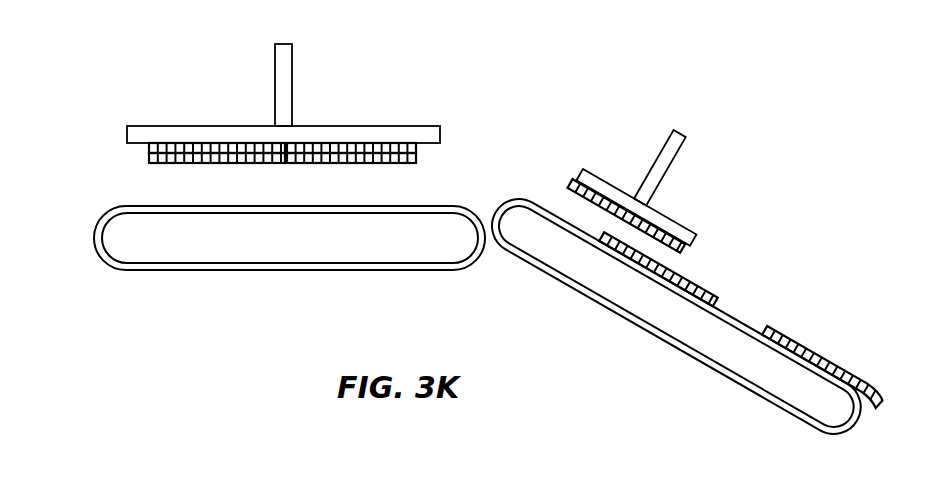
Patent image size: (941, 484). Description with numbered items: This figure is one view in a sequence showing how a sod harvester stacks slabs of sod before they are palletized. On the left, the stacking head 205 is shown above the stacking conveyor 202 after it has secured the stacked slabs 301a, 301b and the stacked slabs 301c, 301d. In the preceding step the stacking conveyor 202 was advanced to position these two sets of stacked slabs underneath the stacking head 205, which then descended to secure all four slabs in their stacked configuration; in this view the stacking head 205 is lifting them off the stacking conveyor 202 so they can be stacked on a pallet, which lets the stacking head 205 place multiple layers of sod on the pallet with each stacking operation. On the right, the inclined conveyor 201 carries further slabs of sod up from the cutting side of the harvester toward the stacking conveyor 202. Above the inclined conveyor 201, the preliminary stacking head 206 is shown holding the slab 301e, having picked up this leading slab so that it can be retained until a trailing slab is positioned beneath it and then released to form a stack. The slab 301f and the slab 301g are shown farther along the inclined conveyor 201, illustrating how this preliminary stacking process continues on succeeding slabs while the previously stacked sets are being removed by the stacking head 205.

The inclined conveyor 201 is at (571, 287).
The stacking conveyor 202 is at (160, 270).
The stacking head 205 is at (275, 77).
The preliminary stacking head 206 is at (647, 170).
The slab of sod 301a is at (188, 141).
The slab of sod 301b is at (145, 141).
The slab of sod 301c is at (340, 141).
The slab of sod 301d is at (373, 141).
The slab of sod 301e is at (692, 248).
The slab of sod 301f is at (720, 300).
The slab of sod 301g is at (808, 352).